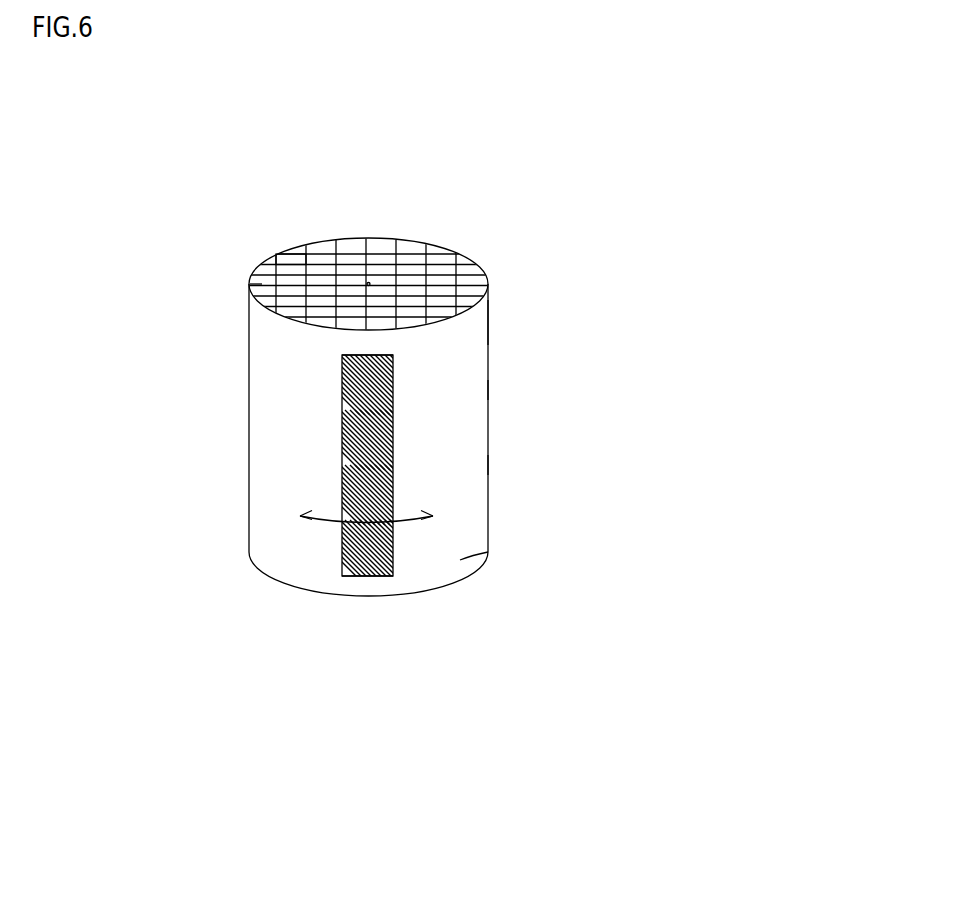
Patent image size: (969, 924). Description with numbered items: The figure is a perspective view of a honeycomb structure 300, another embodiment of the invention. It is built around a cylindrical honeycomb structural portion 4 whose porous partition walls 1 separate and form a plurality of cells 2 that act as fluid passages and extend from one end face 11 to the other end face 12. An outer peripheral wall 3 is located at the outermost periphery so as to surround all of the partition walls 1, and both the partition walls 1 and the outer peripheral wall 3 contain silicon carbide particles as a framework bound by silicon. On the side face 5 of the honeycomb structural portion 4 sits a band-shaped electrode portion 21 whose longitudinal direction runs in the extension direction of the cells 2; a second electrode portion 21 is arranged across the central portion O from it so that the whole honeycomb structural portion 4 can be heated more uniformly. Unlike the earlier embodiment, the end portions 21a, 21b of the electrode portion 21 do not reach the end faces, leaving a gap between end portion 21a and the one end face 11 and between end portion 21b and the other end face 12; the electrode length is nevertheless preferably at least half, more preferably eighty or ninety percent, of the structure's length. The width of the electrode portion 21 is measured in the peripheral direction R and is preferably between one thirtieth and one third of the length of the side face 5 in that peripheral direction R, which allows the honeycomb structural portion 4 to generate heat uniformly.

The honeycomb structure 300 is at (686, 128).
The partition walls 1 is at (397, 260).
The cells 2 is at (287, 258).
The one end face 11 is at (247, 282).
The central portion O is at (386, 272).
The honeycomb structural portion 4 is at (489, 323).
The outer peripheral wall 3 is at (480, 385).
The side face 5 is at (473, 460).
The other end face 12 is at (480, 573).
The electrode portion 21 is at (364, 579).
The end portion of electrode portion 21a is at (368, 355).
The end portion of electrode portion 21b is at (352, 578).
The peripheral direction R is at (325, 520).